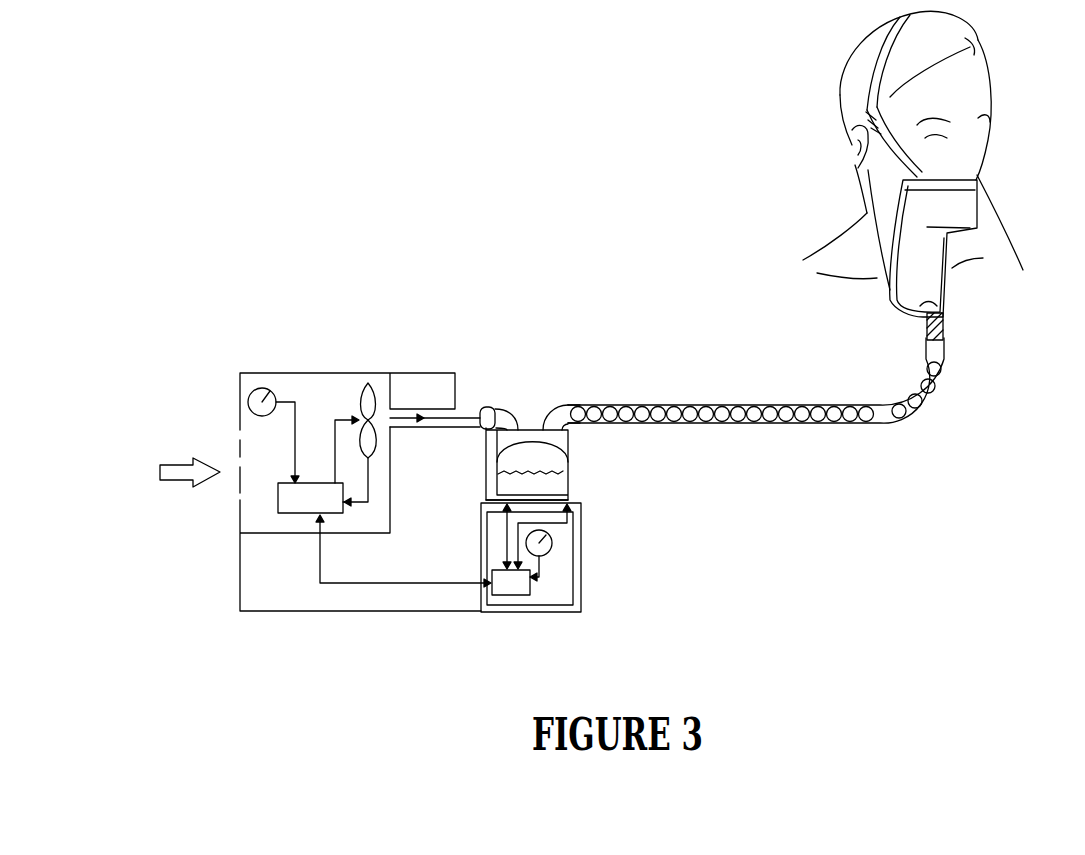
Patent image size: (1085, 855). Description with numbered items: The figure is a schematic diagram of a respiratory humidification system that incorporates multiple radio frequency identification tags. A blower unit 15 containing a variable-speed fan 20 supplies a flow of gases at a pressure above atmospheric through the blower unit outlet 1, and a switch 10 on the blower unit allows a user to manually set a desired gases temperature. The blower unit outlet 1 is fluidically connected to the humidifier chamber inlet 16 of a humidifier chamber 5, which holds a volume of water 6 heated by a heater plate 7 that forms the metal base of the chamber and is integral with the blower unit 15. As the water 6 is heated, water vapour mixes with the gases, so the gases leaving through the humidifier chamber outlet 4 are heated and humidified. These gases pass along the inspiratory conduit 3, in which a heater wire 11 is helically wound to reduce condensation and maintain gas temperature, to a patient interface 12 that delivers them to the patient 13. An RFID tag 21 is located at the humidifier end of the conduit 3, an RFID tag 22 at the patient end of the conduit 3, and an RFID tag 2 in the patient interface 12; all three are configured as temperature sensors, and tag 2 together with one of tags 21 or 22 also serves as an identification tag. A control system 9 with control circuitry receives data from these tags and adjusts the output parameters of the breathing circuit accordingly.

The blower unit outlet 1 is at (520, 440).
The RFID tag 2 is at (990, 255).
The inspiratory conduit 3 is at (745, 424).
The humidifier chamber outlet 4 is at (538, 430).
The humidifier chamber 5 is at (573, 484).
The water 6 is at (572, 462).
The heater plate 7 is at (572, 498).
The control system 9 is at (513, 600).
The switch 10 is at (246, 373).
The heater wire 11 is at (758, 405).
The patient interface 12 is at (978, 187).
The patient 13 is at (888, 183).
The blower unit 15 is at (317, 373).
The humidifier chamber inlet 16 is at (512, 427).
The fan 20 is at (370, 383).
The RFID tag 21 is at (568, 385).
The RFID tag 22 is at (946, 346).